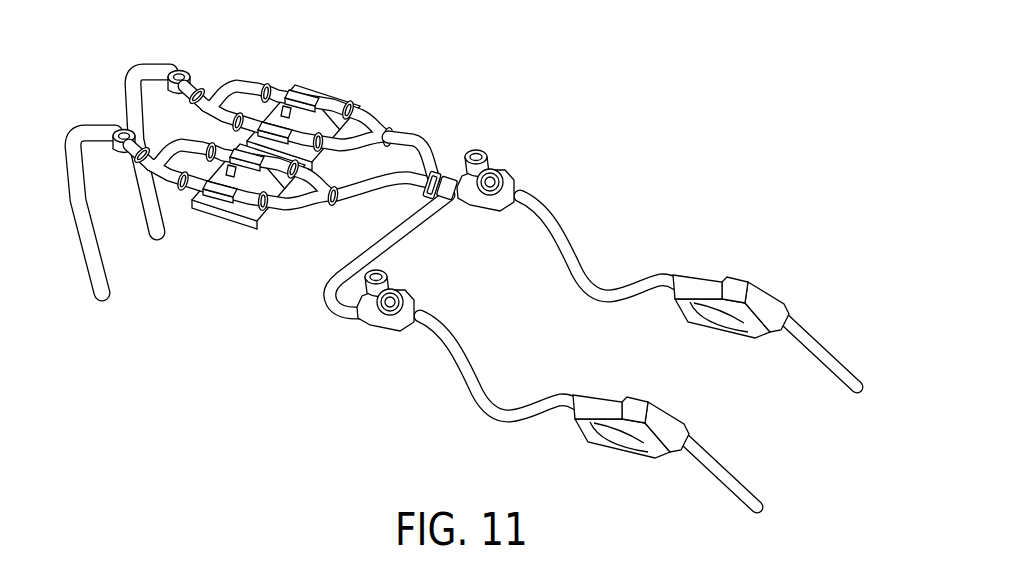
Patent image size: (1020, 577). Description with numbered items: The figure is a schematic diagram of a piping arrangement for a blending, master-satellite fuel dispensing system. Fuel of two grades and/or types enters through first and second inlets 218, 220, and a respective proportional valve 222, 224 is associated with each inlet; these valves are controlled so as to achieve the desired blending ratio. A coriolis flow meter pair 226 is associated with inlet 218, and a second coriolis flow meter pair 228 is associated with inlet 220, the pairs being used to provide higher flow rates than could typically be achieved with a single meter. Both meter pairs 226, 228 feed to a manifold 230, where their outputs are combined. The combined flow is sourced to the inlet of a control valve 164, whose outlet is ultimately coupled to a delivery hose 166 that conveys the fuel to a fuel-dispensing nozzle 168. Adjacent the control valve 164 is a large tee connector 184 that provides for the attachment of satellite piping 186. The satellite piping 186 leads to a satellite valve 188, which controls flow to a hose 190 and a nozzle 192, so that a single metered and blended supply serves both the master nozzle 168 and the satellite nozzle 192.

The control valve 164 is at (510, 172).
The delivery hose 166 is at (580, 252).
The fuel-dispensing nozzle 168 is at (712, 278).
The large tee connector 184 is at (444, 174).
The satellite piping 186 is at (372, 248).
The satellite valve 188 is at (405, 282).
The hose 190 is at (473, 352).
The nozzle 192 is at (608, 392).
The first inlet 218 is at (104, 299).
The second inlet 220 is at (157, 240).
The proportional valve 222 is at (107, 113).
The proportional valve 224 is at (184, 71).
The coriolis flow meter pair 226 is at (300, 187).
The coriolis flow meter pair 228 is at (340, 86).
The manifold 230 is at (415, 136).